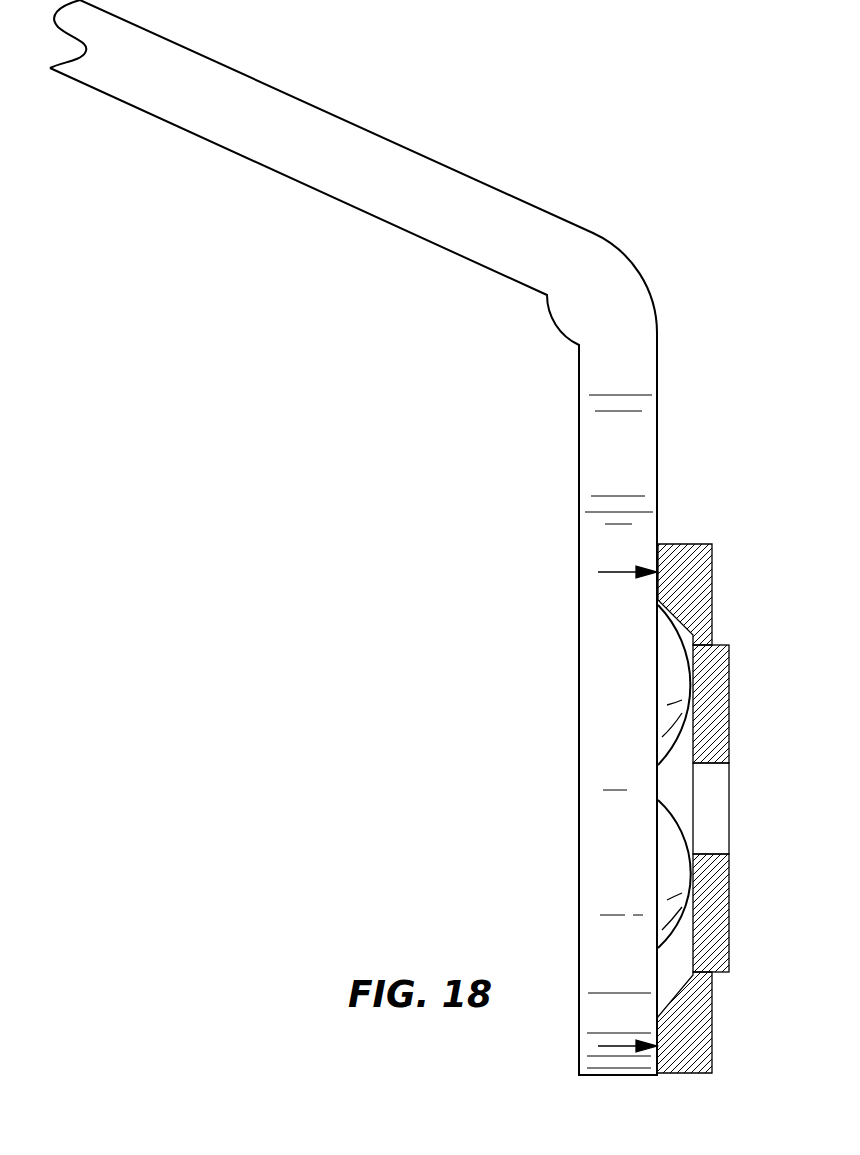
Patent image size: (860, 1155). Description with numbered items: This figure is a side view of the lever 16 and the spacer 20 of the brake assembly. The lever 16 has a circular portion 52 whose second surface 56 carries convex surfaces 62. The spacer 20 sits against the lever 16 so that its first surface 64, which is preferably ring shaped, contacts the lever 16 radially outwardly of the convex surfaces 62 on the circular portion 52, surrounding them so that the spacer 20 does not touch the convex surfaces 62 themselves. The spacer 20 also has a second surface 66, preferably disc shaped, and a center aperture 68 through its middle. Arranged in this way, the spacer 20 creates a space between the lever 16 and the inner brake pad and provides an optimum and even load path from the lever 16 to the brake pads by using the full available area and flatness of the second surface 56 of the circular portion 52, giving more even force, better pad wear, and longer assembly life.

The lever 16 is at (387, 133).
The spacer 20 is at (712, 560).
The circular portion 52 is at (595, 753).
The second surface 56 is at (658, 978).
The convex surfaces 62 is at (670, 668).
The first surface 64 is at (657, 592).
The second surface 66 is at (729, 690).
The center aperture 68 is at (710, 815).